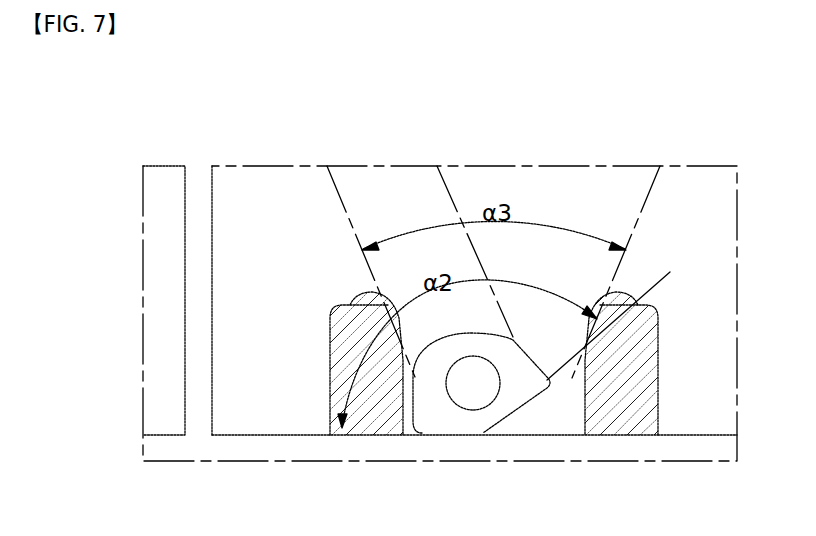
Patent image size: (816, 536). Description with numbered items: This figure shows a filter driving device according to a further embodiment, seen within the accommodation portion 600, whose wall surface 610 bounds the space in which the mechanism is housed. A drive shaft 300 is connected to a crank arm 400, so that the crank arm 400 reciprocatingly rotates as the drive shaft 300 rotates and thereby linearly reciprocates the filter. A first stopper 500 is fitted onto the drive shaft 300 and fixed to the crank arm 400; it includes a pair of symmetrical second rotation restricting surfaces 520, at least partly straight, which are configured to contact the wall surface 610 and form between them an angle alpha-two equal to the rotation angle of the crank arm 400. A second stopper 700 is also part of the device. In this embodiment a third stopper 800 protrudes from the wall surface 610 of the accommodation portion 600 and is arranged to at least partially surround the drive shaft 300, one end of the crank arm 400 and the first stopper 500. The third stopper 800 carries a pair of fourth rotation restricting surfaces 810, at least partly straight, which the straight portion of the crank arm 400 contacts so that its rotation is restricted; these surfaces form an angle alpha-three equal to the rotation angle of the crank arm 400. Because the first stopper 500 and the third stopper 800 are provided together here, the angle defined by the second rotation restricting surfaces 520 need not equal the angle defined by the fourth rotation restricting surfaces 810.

The accommodation portion 600 is at (160, 148).
The wall surface 610 is at (240, 397).
The second stopper 700 is at (203, 174).
The crank arm 400 is at (386, 179).
The third stopper 800 is at (372, 410).
The fourth rotation restricting surface 810 is at (400, 300).
The drive shaft 300 is at (462, 397).
The first stopper 500 is at (515, 383).
The second rotation restricting surface 520 is at (517, 388).